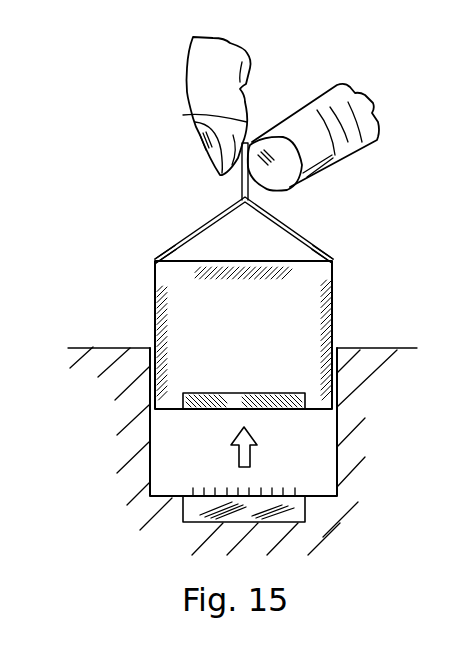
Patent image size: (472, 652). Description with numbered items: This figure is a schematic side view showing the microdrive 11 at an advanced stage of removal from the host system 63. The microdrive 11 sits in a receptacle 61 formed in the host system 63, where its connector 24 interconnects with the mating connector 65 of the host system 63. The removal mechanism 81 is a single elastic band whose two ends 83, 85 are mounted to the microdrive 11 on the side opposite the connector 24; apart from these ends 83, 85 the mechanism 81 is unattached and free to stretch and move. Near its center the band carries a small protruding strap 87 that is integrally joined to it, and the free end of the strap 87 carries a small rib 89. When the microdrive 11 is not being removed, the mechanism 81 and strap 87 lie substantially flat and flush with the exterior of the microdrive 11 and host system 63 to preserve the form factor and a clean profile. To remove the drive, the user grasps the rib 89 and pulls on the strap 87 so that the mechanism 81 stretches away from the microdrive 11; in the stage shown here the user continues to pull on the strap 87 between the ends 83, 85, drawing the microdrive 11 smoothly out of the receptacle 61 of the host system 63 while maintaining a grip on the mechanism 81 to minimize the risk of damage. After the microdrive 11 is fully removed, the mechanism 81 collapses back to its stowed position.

The microdrive 11 is at (256, 331).
The connector 24 is at (231, 393).
The receptacle 61 is at (152, 427).
The host system 63 is at (110, 355).
The connector 65 is at (297, 507).
The mechanism 81 is at (290, 226).
The end 83 is at (155, 262).
The end 85 is at (333, 262).
The strap 87 is at (240, 187).
The rib 89 is at (185, 115).